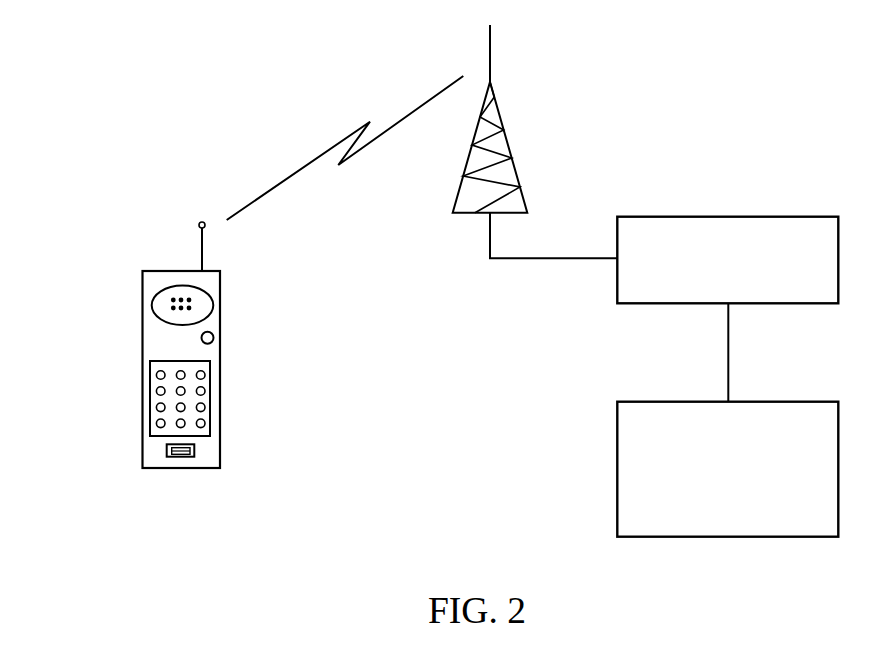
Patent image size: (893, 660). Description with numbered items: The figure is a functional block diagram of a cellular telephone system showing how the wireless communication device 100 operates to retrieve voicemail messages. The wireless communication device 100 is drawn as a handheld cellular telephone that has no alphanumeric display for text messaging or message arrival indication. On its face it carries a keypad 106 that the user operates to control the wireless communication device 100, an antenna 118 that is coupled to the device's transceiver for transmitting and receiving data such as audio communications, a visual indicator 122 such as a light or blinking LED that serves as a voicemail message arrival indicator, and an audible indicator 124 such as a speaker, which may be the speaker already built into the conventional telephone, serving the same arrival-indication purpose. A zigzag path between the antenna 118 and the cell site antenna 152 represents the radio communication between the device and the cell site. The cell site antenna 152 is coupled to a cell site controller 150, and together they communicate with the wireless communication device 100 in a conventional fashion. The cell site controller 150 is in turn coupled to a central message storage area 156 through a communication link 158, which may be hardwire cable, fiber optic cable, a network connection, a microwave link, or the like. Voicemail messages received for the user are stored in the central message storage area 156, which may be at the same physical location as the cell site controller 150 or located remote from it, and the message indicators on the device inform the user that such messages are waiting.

The wireless communication device 100 is at (98, 519).
The keypad 106 is at (210, 383).
The antenna 118 is at (202, 256).
The visual indicator 122 is at (212, 333).
The audible indicator 124 is at (208, 292).
The cell site controller 150 is at (773, 217).
The cell site antenna 152 is at (511, 158).
The central message storage area 156 is at (773, 402).
The communication link 158 is at (728, 357).